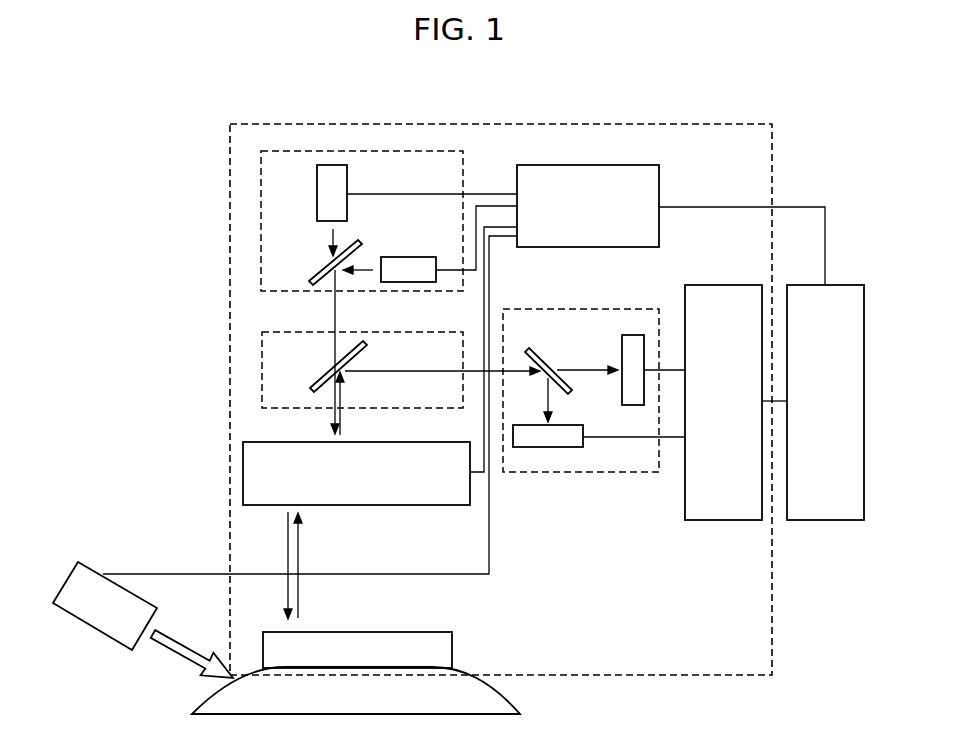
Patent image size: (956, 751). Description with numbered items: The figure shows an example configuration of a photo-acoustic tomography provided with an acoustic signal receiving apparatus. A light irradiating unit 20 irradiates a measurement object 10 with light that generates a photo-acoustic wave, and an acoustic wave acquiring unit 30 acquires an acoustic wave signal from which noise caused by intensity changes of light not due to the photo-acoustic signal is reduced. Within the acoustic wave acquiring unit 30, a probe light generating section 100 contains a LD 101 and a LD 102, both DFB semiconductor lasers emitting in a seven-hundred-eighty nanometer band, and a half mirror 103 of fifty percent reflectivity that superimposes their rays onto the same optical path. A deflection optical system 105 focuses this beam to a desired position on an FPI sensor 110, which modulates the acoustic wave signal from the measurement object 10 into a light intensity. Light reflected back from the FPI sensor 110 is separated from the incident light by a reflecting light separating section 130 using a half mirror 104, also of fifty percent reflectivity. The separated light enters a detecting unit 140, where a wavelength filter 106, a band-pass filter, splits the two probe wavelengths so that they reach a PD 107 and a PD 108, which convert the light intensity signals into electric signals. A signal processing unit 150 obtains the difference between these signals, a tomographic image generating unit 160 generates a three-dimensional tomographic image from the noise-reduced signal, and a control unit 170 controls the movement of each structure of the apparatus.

The measurement object 10 is at (493, 700).
The light irradiating unit 20 is at (73, 607).
The acoustic wave acquiring unit 30 is at (270, 123).
The probe light generating section 100 is at (297, 152).
The LD 101 is at (322, 177).
The LD 102 is at (412, 260).
The half mirror 103 is at (360, 243).
The half mirror 104 is at (363, 343).
The deflection optical system 105 is at (300, 442).
The wavelength filter 106 is at (543, 362).
The PD 107 is at (628, 340).
The PD 108 is at (570, 442).
The FPI sensor 110 is at (443, 650).
The reflecting light separating section 130 is at (300, 332).
The detecting unit 140 is at (538, 308).
The signal processing unit 150 is at (740, 283).
The tomographic image generating unit 160 is at (847, 283).
The control unit 170 is at (662, 178).